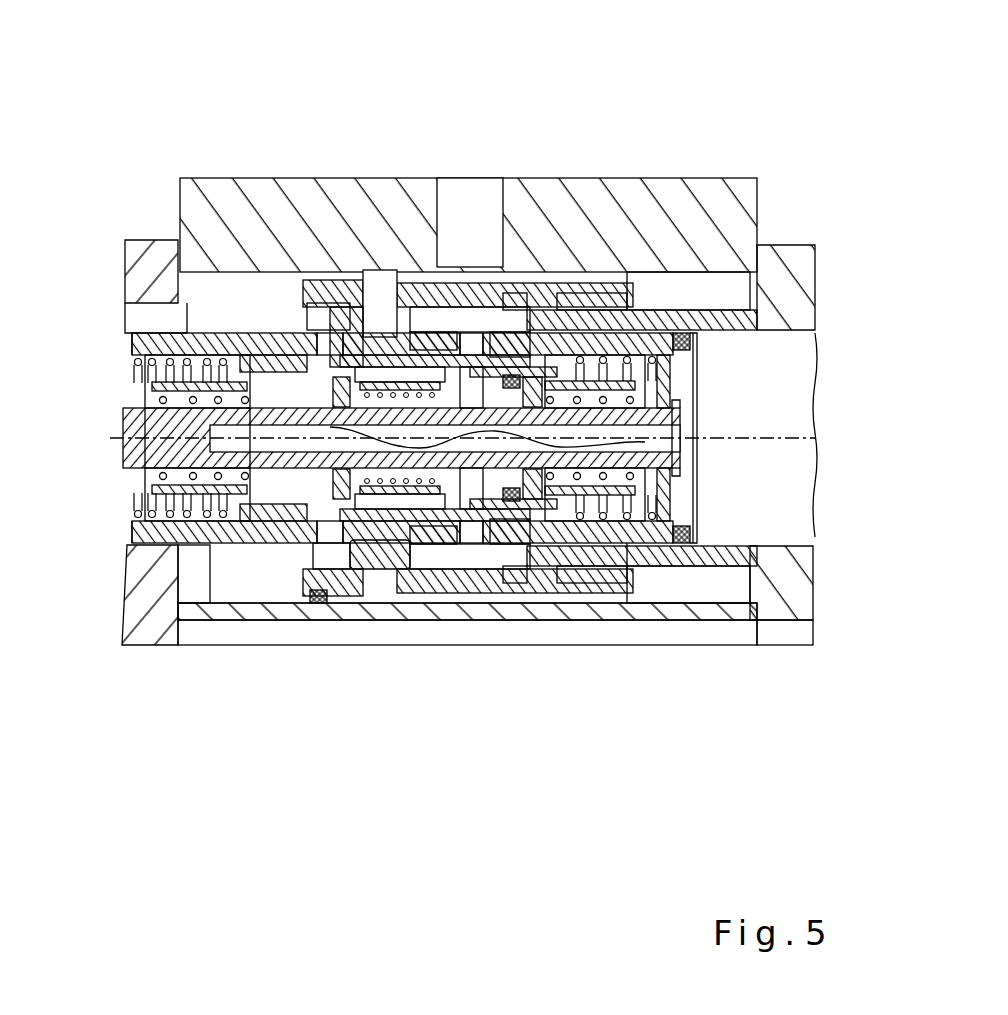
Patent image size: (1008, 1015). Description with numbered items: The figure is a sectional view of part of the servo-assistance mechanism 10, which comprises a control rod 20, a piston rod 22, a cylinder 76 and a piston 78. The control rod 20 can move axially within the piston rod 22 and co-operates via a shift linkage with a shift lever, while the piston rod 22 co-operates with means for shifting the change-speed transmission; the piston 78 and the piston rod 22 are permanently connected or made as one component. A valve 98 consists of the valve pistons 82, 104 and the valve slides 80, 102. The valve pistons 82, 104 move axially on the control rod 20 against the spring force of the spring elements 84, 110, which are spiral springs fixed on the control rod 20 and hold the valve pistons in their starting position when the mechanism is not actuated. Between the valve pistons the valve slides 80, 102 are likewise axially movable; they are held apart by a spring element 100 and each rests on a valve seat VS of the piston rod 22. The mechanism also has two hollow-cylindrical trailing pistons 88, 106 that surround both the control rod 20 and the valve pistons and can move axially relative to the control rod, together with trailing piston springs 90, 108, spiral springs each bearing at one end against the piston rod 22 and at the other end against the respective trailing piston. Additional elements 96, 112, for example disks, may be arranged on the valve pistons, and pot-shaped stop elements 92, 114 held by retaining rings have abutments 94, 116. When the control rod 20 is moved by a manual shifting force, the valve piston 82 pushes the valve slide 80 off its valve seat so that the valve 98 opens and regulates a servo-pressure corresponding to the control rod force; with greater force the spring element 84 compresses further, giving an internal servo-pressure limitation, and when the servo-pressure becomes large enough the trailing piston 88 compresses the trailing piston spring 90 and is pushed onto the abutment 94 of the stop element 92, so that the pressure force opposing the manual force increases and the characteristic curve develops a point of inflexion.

The servo-assistance mechanism 10 is at (578, 157).
The control rod 20 is at (456, 247).
The piston rod 22 is at (323, 371).
The cylinder 76 is at (482, 164).
The piston 78 is at (572, 164).
The valve slide 80 is at (606, 542).
The valve piston 82 is at (507, 545).
The spring element 84 is at (570, 523).
The trailing piston 88 is at (615, 213).
The trailing piston spring 90 is at (730, 280).
The stop element 92 is at (633, 527).
The abutment 94 is at (600, 520).
The additional element 96 is at (532, 533).
The valve 98 is at (389, 640).
The spring element 100 is at (440, 589).
The valve slide 102 is at (468, 310).
The valve piston 104 is at (458, 192).
The trailing piston 106 is at (355, 212).
The trailing piston spring 108 is at (115, 572).
The spring element 110 is at (402, 658).
The additional element 112 is at (291, 610).
The stop element 114 is at (174, 610).
The abutment 116 is at (402, 212).
The valve seat VS is at (335, 437).